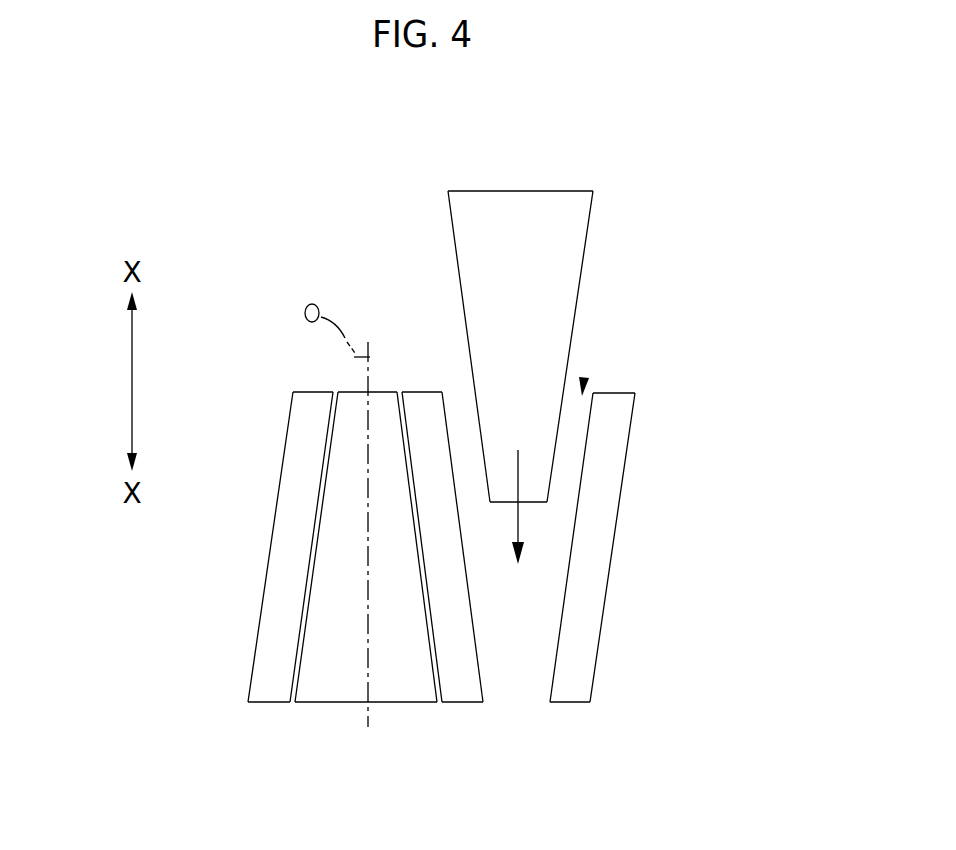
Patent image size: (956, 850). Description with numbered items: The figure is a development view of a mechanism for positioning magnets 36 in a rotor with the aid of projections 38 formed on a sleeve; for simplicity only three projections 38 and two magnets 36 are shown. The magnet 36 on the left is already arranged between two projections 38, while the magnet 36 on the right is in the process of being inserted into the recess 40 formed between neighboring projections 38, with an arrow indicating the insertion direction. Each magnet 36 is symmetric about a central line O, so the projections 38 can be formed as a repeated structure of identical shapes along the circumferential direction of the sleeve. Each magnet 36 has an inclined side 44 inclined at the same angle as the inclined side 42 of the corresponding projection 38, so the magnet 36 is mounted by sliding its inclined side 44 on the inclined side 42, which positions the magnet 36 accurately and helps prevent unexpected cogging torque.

The magnet 36 is at (566, 191).
The projection 38 is at (308, 392).
The recess 40 is at (585, 378).
The inclined side of the projection 42 is at (260, 608).
The inclined side of the magnet 44 is at (580, 280).